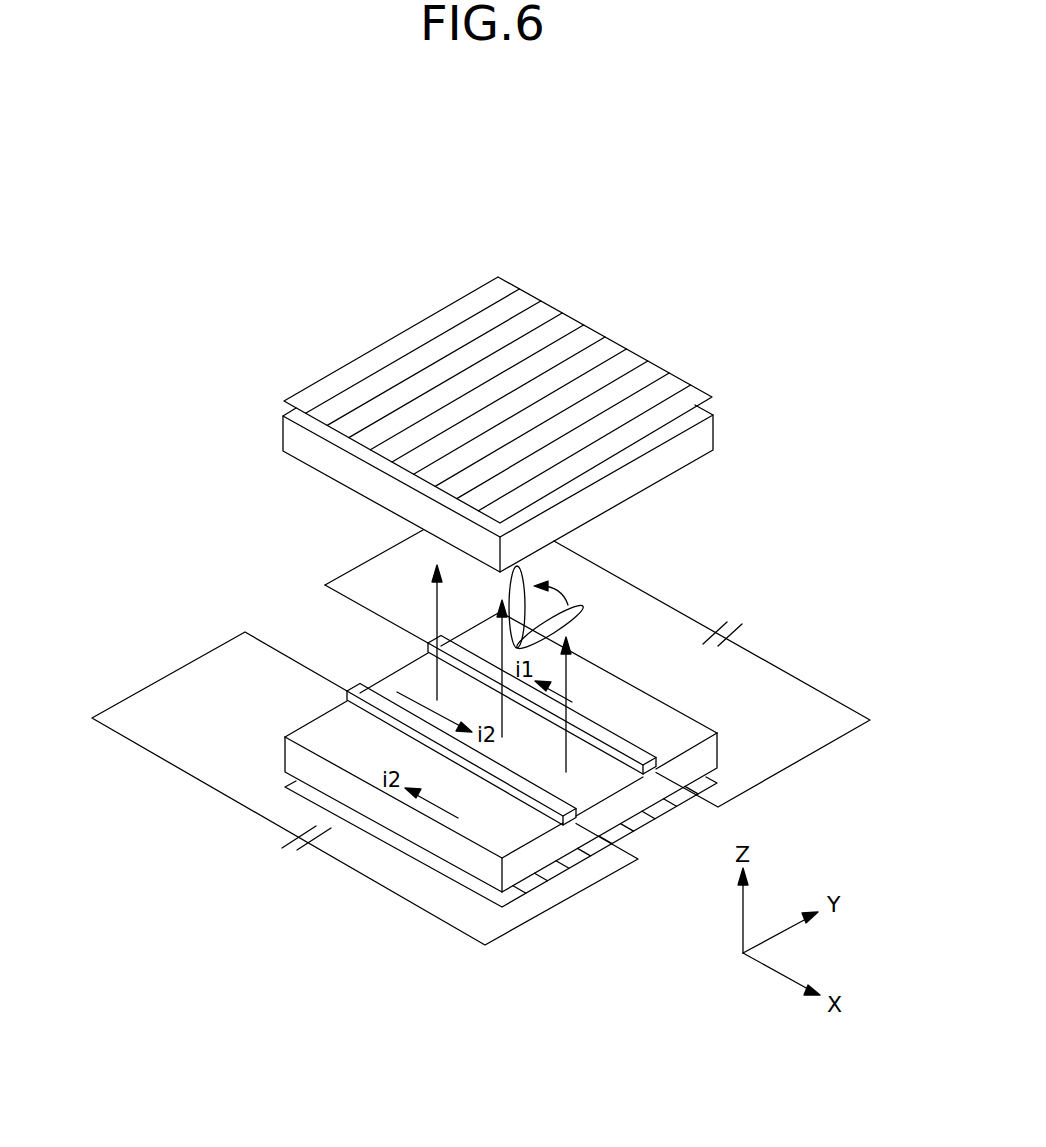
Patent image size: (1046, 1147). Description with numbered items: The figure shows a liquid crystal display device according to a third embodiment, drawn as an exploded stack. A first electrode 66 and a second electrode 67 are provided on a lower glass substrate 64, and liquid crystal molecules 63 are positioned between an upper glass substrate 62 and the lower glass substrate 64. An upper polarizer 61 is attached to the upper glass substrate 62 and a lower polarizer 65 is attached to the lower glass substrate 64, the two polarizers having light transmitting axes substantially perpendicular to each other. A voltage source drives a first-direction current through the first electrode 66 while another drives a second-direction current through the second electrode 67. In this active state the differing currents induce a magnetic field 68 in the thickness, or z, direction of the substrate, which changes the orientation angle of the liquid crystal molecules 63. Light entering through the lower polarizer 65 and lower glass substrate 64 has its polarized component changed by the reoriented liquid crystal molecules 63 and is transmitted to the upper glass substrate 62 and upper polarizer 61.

The upper polarizer 61 is at (713, 397).
The upper glass substrate 62 is at (713, 432).
The liquid crystal molecules 63 is at (583, 608).
The lower glass substrate 64 is at (718, 752).
The lower polarizer 65 is at (640, 832).
The first electrode 66 is at (618, 740).
The second electrode 67 is at (552, 792).
The magnetic field 68 is at (567, 675).